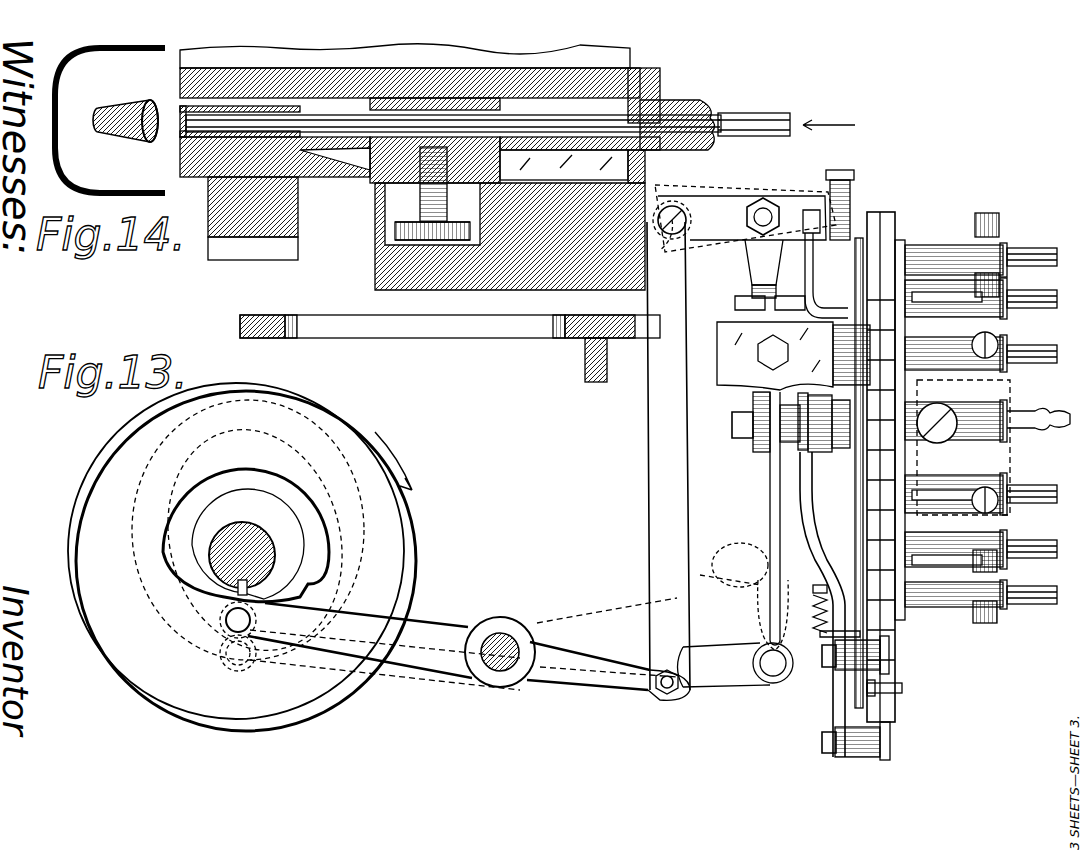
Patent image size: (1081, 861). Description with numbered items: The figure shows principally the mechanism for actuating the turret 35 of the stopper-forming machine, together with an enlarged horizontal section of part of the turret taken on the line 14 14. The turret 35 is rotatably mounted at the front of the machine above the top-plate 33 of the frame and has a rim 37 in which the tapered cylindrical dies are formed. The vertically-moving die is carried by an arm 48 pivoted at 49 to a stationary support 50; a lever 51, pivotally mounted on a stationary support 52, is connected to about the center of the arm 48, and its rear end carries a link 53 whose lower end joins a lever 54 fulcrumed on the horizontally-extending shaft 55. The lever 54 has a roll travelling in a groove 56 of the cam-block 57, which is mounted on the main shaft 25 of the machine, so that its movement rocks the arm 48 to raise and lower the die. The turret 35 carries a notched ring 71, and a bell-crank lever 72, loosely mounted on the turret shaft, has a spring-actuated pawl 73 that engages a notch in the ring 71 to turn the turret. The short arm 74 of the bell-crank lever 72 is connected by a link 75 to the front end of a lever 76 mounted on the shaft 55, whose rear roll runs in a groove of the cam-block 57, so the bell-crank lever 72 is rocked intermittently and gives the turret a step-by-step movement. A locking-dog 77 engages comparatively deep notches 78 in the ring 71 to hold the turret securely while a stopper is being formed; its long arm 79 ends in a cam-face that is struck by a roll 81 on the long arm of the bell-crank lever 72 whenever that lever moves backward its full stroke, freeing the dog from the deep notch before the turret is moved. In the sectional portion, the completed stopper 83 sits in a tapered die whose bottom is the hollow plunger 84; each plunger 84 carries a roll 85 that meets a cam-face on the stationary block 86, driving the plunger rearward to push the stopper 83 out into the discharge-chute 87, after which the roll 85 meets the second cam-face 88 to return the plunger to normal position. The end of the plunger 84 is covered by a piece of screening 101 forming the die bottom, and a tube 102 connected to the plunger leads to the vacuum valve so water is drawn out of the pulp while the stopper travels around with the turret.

In FIG. 13, the section line 14 is at (942, 439).
In FIG. 13, the drive shaft 25 is at (255, 528).
In FIG. 13, the top-plate 33 is at (374, 330).
In FIG. 14, the turret 35 is at (620, 52).
In FIG. 13, the turret 35 is at (938, 630).
In FIG. 14, the rim 37 is at (182, 56).
In FIG. 13, the rim 37 is at (862, 262).
In FIG. 13, the arm 48 is at (845, 205).
In FIG. 13, the pivot 49 is at (808, 228).
In FIG. 13, the stationary support 50 is at (826, 262).
In FIG. 13, the lever 51 is at (718, 200).
In FIG. 13, the stationary support 52 is at (764, 248).
In FIG. 13, the link 53 is at (640, 453).
In FIG. 13, the lever 54 is at (640, 690).
In FIG. 13, the horizontally-extending shaft 55 is at (498, 660).
In FIG. 13, the groove 56 is at (198, 598).
In FIG. 13, the cam-block 57 is at (385, 572).
In FIG. 14, the notched ring 71 is at (279, 206).
In FIG. 13, the notched ring 71 is at (873, 491).
In FIG. 13, the bell-crank lever 72 is at (842, 706).
In FIG. 13, the spring-actuated pawl 73 is at (880, 665).
In FIG. 13, the short arm 74 is at (758, 446).
In FIG. 13, the link 75 is at (773, 551).
In FIG. 13, the lever 76 is at (712, 625).
In FIG. 13, the locking-dog 77 is at (880, 243).
In FIG. 14, the deep notches 78 is at (268, 250).
In FIG. 13, the long arm 79 is at (878, 695).
In FIG. 13, the roll 81 is at (870, 745).
In FIG. 14, the stopper 83 is at (106, 116).
In FIG. 14, the plunger 84 is at (645, 118).
In FIG. 13, the plunger 84 is at (1010, 262).
In FIG. 14, the roll 85 is at (392, 195).
In FIG. 13, the roll 85 is at (1000, 640).
In FIG. 14, the stationary block 86 is at (389, 272).
In FIG. 13, the stationary block 86 is at (988, 458).
In FIG. 14, the discharge-chute 87 is at (60, 140).
In FIG. 14, the second cam-face 88 is at (360, 285).
In FIG. 13, the second cam-face 88 is at (985, 400).
In FIG. 14, the screening 101 is at (180, 112).
In FIG. 14, the tube 102 is at (760, 128).